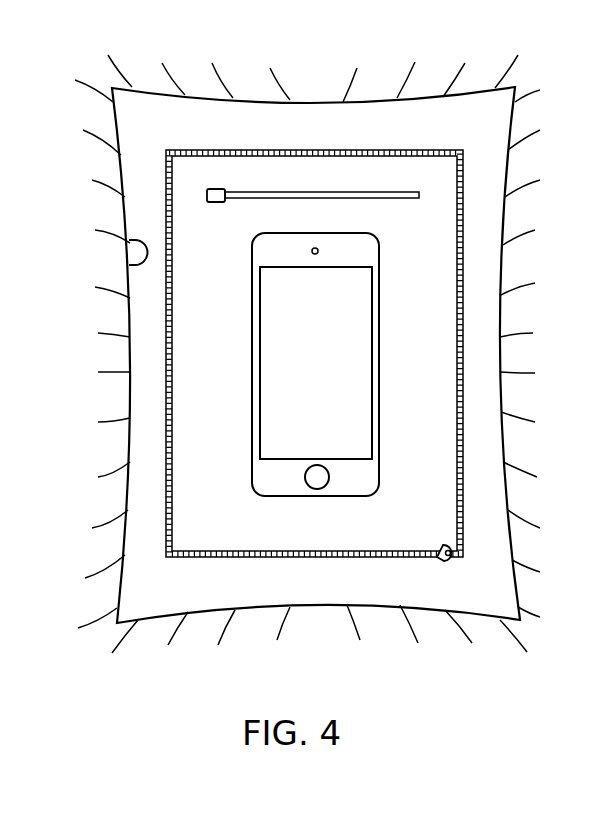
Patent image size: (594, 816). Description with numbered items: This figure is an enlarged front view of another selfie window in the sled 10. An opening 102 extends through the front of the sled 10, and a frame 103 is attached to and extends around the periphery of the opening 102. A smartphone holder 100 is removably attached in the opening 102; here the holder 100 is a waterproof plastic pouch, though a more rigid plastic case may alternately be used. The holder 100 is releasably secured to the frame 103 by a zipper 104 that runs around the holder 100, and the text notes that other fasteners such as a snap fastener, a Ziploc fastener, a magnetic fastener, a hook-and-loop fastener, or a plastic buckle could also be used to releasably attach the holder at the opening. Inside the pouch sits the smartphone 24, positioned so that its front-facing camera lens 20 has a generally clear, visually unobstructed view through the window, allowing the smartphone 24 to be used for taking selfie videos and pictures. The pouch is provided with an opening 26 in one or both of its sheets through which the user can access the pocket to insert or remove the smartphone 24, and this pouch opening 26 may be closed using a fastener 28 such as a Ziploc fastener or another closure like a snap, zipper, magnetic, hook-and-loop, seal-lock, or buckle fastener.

The sled 10 is at (128, 687).
The front-facing camera lens 20 is at (315, 247).
The smartphone 24 is at (302, 376).
The opening 26 is at (396, 192).
The fastener 28 is at (207, 195).
The smartphone holder 100 is at (220, 450).
The opening 102 is at (131, 263).
The frame 103 is at (155, 372).
The zipper 104 is at (445, 561).